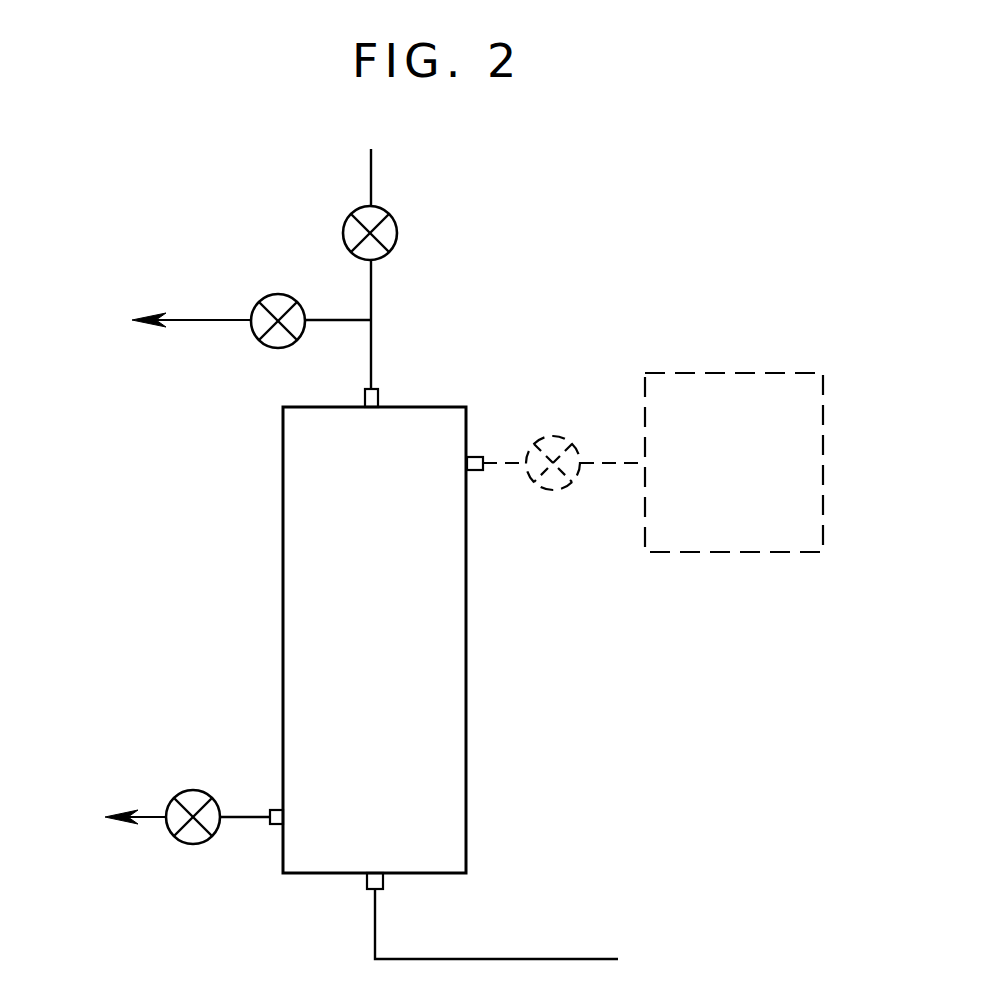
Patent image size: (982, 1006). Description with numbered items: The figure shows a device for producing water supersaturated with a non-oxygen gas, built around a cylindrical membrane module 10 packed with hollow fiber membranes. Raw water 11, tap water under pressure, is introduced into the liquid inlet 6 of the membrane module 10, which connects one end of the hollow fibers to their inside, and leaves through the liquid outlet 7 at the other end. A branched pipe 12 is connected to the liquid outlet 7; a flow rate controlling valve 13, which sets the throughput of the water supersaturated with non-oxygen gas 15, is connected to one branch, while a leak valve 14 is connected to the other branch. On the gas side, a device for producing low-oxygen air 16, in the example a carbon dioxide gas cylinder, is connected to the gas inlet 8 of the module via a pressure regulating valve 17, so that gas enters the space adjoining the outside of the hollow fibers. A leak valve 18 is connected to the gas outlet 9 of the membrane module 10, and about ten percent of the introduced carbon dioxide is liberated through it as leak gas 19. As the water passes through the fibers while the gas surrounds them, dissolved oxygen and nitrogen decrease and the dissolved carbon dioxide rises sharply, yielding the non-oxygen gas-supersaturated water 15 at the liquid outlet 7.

The liquid inlet 6 is at (368, 888).
The liquid outlet 7 is at (380, 396).
The gas inlet 8 is at (478, 455).
The gas outlet 9 is at (275, 828).
The membrane module 10 is at (437, 678).
The raw water 11 is at (529, 928).
The branched pipe 12 is at (372, 316).
The flow rate controlling valve 13 is at (278, 295).
The leak valve 14 is at (397, 222).
The water supersaturated with non-oxygen gas 15 is at (158, 321).
The device for producing low-oxygen air 16 is at (765, 400).
The pressure regulating valve 17 is at (560, 440).
The leak valve 18 is at (190, 790).
The leak gas 19 is at (106, 817).